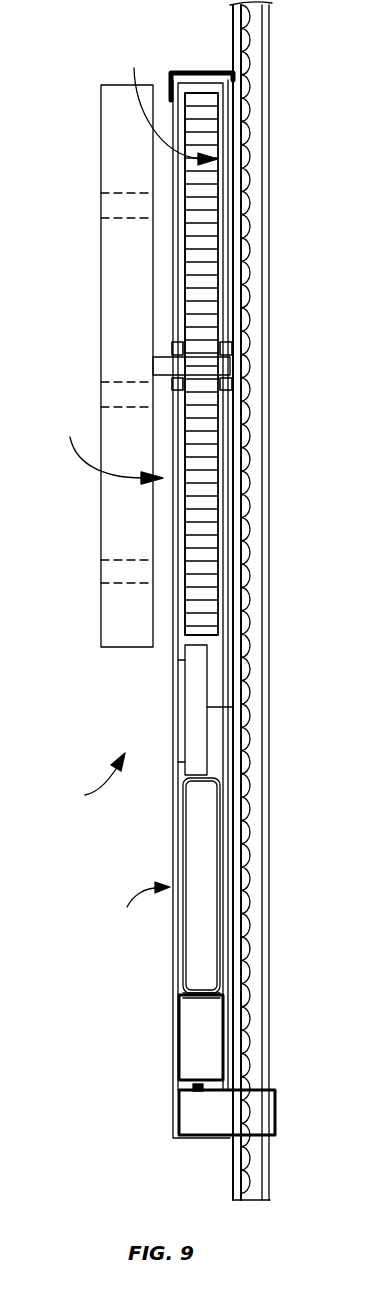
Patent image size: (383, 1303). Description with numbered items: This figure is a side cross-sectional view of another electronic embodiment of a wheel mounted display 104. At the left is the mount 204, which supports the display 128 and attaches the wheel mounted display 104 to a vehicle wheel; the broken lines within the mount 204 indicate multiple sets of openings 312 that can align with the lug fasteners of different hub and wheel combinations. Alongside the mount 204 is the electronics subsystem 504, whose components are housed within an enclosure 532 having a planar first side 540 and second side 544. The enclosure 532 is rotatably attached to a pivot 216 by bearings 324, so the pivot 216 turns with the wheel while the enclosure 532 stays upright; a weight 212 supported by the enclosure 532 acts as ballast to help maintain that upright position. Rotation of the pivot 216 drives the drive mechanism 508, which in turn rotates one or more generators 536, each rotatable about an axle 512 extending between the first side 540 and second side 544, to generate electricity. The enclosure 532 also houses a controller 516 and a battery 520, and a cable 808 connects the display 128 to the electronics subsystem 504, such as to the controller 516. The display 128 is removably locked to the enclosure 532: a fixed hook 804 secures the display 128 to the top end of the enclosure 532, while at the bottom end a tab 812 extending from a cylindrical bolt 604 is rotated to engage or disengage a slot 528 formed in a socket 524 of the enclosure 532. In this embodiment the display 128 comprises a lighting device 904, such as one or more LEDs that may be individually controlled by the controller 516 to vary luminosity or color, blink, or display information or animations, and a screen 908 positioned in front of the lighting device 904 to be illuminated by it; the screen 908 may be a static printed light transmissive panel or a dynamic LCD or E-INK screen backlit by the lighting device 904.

The wheel mounted display 104 is at (82, 777).
The display 128 is at (251, 604).
The mount 204 is at (105, 85).
The weight 212 is at (193, 995).
The pivot 216 is at (183, 295).
The openings 312 is at (120, 193).
The bearings 324 is at (233, 383).
The electronics subsystem 504 is at (106, 447).
The drive mechanism 508 is at (162, 352).
The axle 512 is at (227, 181).
The controller 516 is at (183, 683).
The battery 520 is at (178, 803).
The socket 524 is at (180, 1112).
The slot 528 is at (197, 1087).
The enclosure 532 is at (173, 755).
The generator 536 is at (220, 137).
The first side 540 is at (140, 908).
The second side 544 is at (166, 104).
The bolt 604 is at (277, 1113).
The hook 804 is at (208, 70).
The cable 808 is at (207, 707).
The tab 812 is at (197, 1091).
The lighting device 904 is at (245, 878).
The screen 908 is at (270, 710).